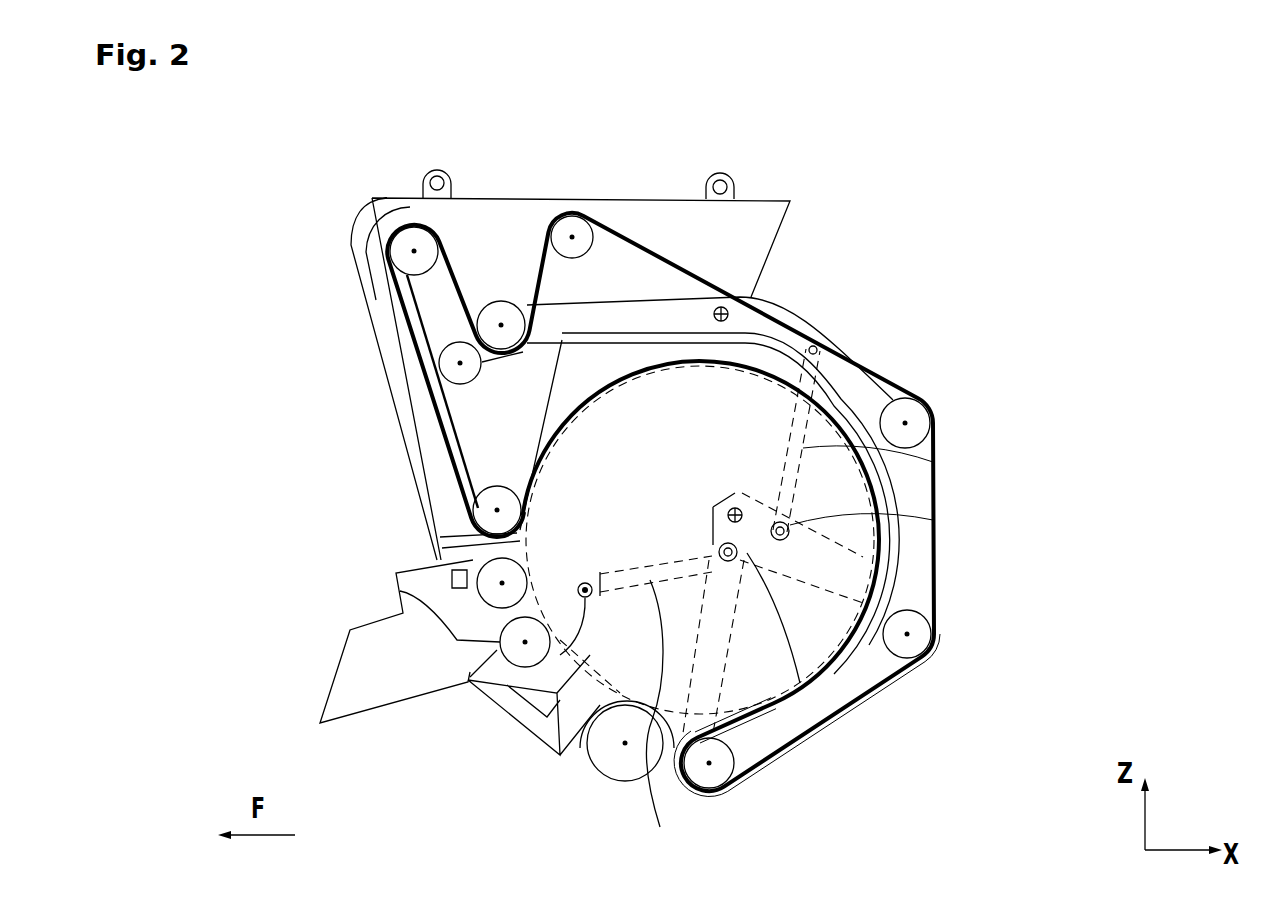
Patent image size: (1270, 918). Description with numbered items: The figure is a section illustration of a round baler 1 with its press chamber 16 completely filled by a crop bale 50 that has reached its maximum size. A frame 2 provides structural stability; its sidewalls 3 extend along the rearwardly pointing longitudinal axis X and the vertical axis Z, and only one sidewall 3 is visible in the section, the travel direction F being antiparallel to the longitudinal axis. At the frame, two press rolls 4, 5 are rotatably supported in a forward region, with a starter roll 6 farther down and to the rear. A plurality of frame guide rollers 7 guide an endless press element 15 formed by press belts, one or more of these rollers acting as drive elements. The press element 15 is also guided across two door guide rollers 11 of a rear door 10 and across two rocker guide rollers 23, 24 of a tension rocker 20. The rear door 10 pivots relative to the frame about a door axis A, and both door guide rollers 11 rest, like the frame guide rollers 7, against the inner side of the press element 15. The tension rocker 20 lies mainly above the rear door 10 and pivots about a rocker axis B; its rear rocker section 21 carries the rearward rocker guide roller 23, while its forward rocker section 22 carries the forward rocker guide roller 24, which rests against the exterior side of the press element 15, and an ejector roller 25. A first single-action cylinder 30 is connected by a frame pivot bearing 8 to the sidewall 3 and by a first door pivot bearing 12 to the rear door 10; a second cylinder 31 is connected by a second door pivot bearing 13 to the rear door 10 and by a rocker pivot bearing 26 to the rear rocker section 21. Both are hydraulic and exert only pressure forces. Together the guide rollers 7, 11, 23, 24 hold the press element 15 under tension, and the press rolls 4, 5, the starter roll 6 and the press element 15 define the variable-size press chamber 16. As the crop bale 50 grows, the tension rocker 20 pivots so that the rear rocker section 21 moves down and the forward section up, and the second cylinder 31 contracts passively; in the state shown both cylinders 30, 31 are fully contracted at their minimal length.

The round baler 1 is at (1028, 158).
The frame 2 is at (530, 198).
The sidewall 3 is at (630, 650).
The press roll 4 is at (488, 560).
The press roll 5 is at (403, 593).
The starter roll 6 is at (607, 787).
The frame guide roller 7 is at (588, 222).
The frame pivot bearing 8 is at (533, 667).
The rear door 10 is at (880, 548).
The door guide roller 11 is at (757, 773).
The first door pivot bearing 12 is at (733, 560).
The second door pivot bearing 13 is at (933, 520).
The press element 15 is at (897, 370).
The press chamber 16 is at (567, 753).
The tension rocker 20 is at (772, 296).
The rear rocker section 21 is at (845, 352).
The forward rocker section 22 is at (540, 355).
The rearward rocker guide roller 23 is at (935, 440).
The forward rocker guide roller 24 is at (500, 305).
The ejector roller 25 is at (440, 375).
The rocker pivot bearing 26 is at (848, 340).
The first single-action cylinder 30 is at (655, 795).
The second cylinder 31 is at (933, 462).
The crop bale 50 is at (820, 692).
The door axis A is at (733, 508).
The rocker axis B is at (718, 307).